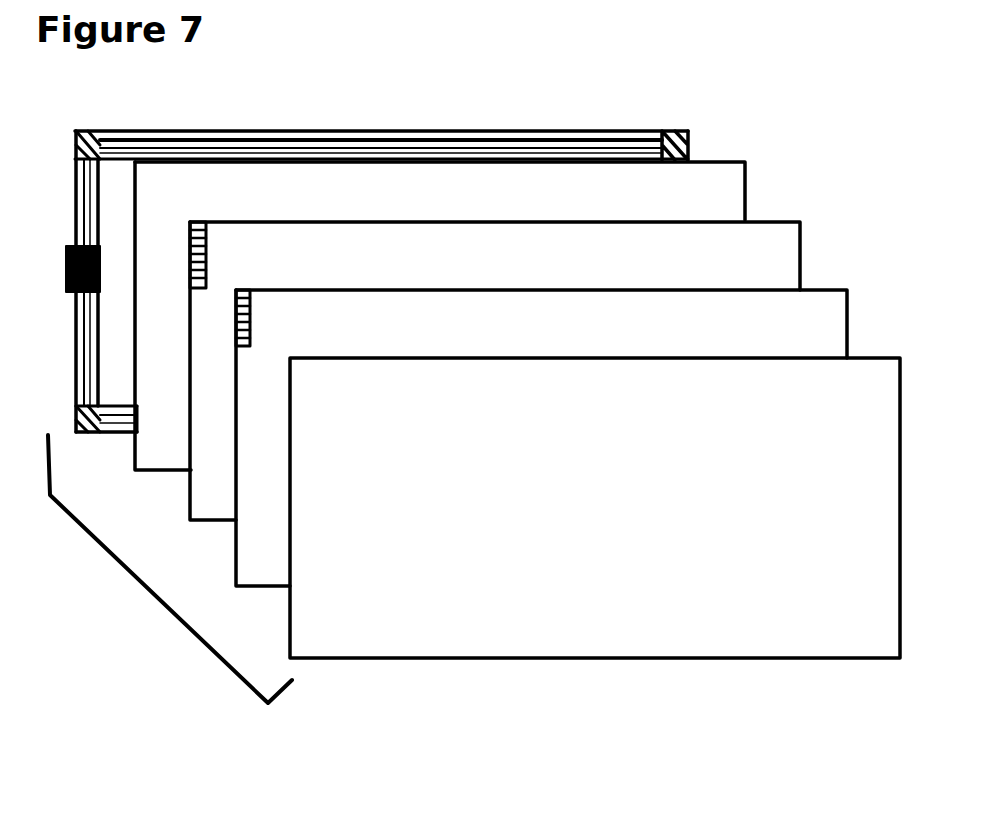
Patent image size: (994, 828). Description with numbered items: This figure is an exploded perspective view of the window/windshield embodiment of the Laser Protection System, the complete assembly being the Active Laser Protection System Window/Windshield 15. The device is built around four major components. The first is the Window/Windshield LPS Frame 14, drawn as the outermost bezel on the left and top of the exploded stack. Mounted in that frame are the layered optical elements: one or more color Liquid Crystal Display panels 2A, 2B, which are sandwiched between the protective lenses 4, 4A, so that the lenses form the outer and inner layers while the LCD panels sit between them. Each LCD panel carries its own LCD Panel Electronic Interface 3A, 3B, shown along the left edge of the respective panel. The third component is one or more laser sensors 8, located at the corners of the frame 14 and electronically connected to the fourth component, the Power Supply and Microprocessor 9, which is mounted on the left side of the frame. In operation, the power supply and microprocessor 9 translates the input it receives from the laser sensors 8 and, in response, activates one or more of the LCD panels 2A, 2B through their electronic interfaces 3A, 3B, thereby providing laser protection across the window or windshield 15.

The Window/Windshield LPS Frame 14 is at (412, 128).
The Laser Sensor 8 is at (86, 118).
The Power Supply and Microprocessor 9 is at (52, 289).
The Protective Lens 4A is at (714, 190).
The Liquid Crystal Display (LCD) Panel 2B is at (770, 250).
The LCD Panel Electronic Interface 3B is at (207, 218).
The Liquid Crystal Display (LCD) Panel 2A is at (820, 328).
The LCD Panel Electronic Interface 3A is at (245, 286).
The Protective Lens 4 is at (844, 634).
The Active Laser Protection System Window/Windshield 15 is at (134, 586).